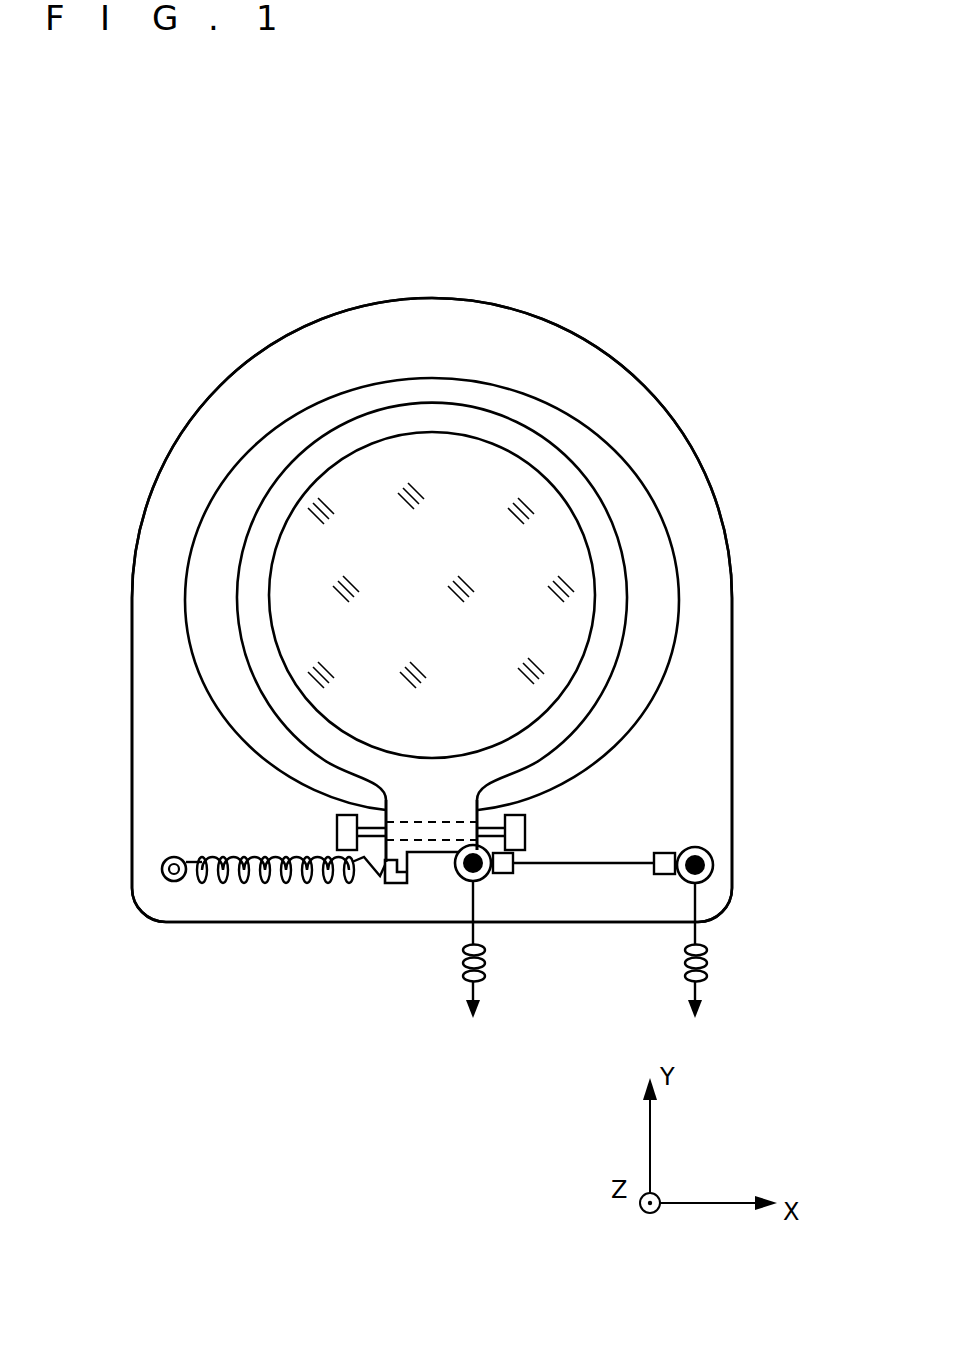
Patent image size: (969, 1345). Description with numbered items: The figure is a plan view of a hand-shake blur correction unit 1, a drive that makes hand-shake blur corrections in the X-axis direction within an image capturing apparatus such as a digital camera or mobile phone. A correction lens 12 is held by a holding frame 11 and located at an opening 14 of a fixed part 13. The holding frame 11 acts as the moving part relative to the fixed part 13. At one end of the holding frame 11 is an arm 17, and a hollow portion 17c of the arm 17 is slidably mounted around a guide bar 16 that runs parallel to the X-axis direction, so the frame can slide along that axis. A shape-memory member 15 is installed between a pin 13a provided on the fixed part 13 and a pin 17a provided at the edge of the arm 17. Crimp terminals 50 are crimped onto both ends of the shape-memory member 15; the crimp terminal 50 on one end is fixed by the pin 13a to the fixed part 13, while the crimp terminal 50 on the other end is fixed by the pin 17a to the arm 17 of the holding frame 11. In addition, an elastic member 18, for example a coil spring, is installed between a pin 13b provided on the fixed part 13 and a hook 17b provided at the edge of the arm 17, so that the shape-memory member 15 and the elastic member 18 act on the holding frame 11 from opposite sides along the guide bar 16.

The hand-shake blur correction unit 1 is at (781, 285).
The holding frame 11 is at (353, 440).
The correction lens 12 is at (413, 462).
The fixed part 13 is at (478, 322).
The pin 13a is at (713, 866).
The pin 13b is at (174, 882).
The opening 14 is at (600, 458).
The shape-memory member 15 is at (607, 860).
The guide bar 16 is at (506, 832).
The arm 17 is at (403, 801).
The pin 17a is at (480, 869).
The hook 17b is at (392, 885).
The hollow portion 17c is at (433, 828).
The elastic member 18 is at (286, 883).
The crimp terminals 50 is at (458, 874).